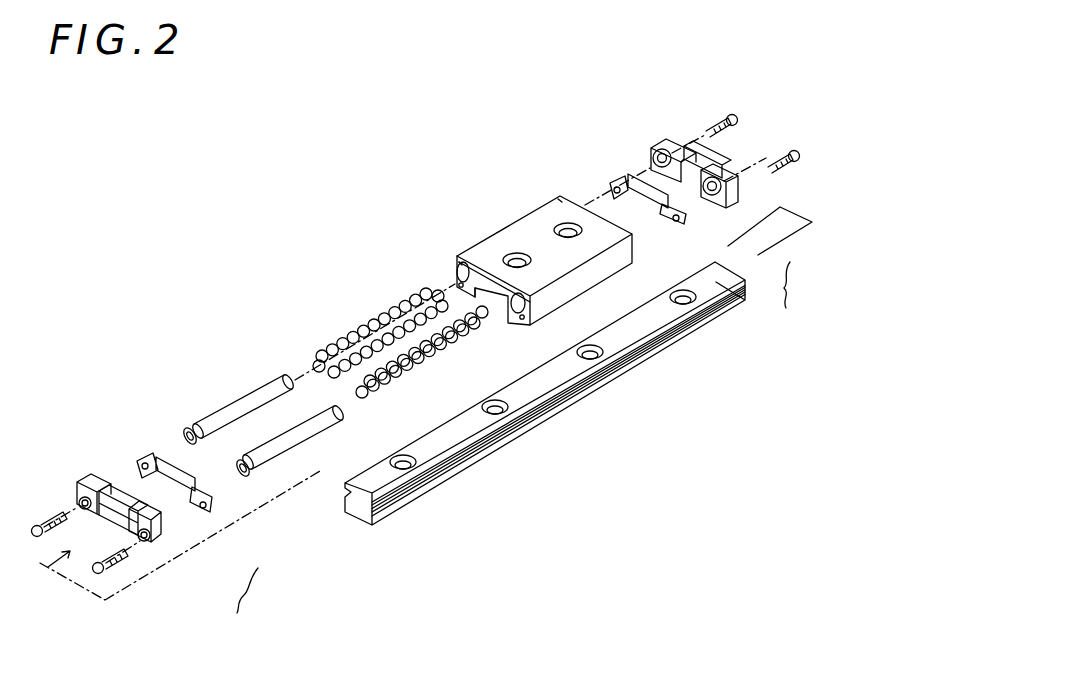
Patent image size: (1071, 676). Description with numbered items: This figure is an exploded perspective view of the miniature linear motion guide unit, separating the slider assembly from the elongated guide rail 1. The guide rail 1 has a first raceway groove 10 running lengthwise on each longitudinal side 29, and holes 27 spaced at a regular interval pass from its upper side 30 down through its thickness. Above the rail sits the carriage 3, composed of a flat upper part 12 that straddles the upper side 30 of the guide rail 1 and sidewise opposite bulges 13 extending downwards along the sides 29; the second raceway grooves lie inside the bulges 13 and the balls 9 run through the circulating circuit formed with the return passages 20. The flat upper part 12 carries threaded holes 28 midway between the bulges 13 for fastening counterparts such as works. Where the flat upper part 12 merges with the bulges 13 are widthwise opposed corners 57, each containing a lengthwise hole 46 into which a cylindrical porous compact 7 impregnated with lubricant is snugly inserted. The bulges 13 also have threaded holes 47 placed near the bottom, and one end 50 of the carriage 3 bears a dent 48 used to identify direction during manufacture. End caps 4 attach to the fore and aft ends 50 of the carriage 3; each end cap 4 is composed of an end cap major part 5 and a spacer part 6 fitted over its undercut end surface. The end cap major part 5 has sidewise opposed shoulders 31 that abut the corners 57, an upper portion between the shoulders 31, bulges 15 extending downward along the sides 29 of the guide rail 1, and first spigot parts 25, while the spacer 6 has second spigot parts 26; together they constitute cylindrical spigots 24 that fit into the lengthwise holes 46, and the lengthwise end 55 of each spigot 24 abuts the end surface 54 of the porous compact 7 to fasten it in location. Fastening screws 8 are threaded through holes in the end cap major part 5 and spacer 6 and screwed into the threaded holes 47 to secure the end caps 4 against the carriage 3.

The guide rail 1 is at (448, 442).
The carriage 3 is at (522, 233).
The end cap 4 is at (521, 439).
The end cap major part 5 is at (157, 537).
The spacer part 6 is at (208, 500).
The cylindrical porous compact 7 is at (257, 392).
The fastening screws 8 is at (55, 518).
The balls 9 is at (398, 362).
The first raceway groove 10 is at (613, 360).
The flat upper part 12 is at (457, 270).
The bulges 13 is at (457, 258).
The bulges 15 is at (562, 197).
The return passage 20 is at (187, 428).
The cylindrical spigots 24 is at (463, 328).
The first spigot parts 25 is at (108, 477).
The second spigot parts 26 is at (548, 190).
The holes 27 is at (407, 468).
The threaded holes 28 is at (508, 257).
The longitudinal sides 29 is at (545, 410).
The upper side 30 is at (470, 427).
The shoulders 31 is at (92, 480).
The lengthwise hole 46 is at (455, 263).
The threaded holes 47 is at (457, 285).
The dent 48 is at (470, 283).
The fore and aft ends 50 is at (566, 212).
The end surface 54 is at (240, 458).
The lengthwise end 55 is at (653, 153).
The corners 57 is at (457, 260).